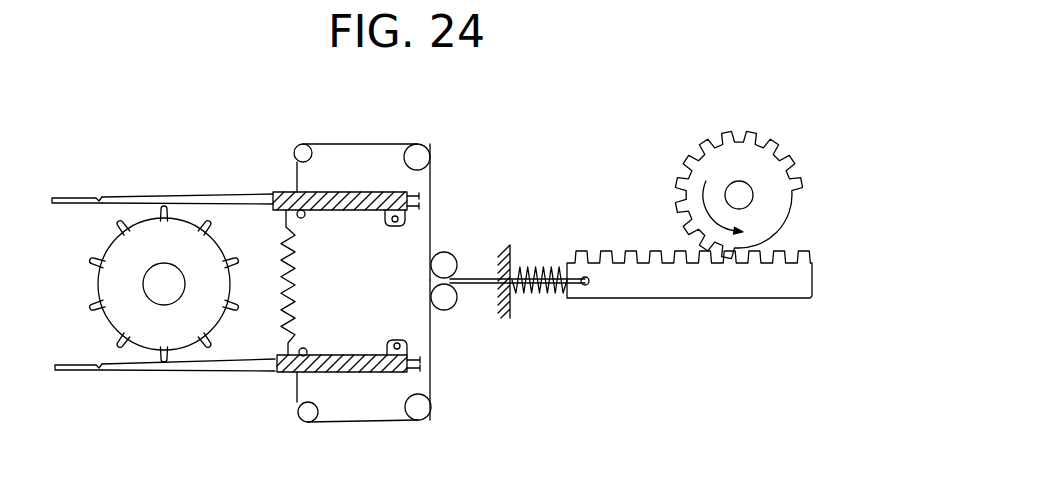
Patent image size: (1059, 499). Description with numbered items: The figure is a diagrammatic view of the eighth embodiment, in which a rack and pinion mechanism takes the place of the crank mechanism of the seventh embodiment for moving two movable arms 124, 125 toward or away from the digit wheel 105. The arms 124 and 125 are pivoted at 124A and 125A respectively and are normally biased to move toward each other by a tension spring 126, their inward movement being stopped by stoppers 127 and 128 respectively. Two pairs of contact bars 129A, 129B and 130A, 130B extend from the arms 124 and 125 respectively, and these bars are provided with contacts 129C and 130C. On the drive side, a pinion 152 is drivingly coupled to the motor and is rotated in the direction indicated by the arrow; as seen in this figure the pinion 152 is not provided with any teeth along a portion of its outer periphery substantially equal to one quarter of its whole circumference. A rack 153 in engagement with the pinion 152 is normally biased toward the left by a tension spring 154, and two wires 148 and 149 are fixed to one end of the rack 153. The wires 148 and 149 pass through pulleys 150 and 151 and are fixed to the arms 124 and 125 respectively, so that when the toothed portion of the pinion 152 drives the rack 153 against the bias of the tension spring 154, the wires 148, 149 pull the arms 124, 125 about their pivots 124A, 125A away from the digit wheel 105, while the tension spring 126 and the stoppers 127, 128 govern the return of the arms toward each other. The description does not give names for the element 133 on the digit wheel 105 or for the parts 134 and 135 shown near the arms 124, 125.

The digit wheel 105 is at (113, 277).
The movable arm 124 is at (362, 192).
The pivot 124A is at (394, 224).
The movable arm 125 is at (366, 366).
The pivot 125A is at (397, 340).
The tension spring 126 is at (298, 281).
The stopper 127 is at (306, 216).
The stopper 128 is at (306, 349).
The contact bar 129A is at (208, 195).
The contact bar 129B is at (70, 205).
The contact 129C is at (100, 196).
The contact bar 130A is at (238, 372).
The contact bar 130B is at (97, 364).
The contact 130C is at (100, 372).
The wheel tooth 133 is at (90, 260).
The guide pin 134 is at (416, 195).
The guide pin 135 is at (417, 206).
The wire 148 is at (433, 170).
The wire 149 is at (422, 364).
The pulley 150 is at (456, 262).
The pulley 151 is at (304, 150).
The pinion 152 is at (735, 150).
The rack 153 is at (728, 265).
The tension spring 154 is at (545, 272).